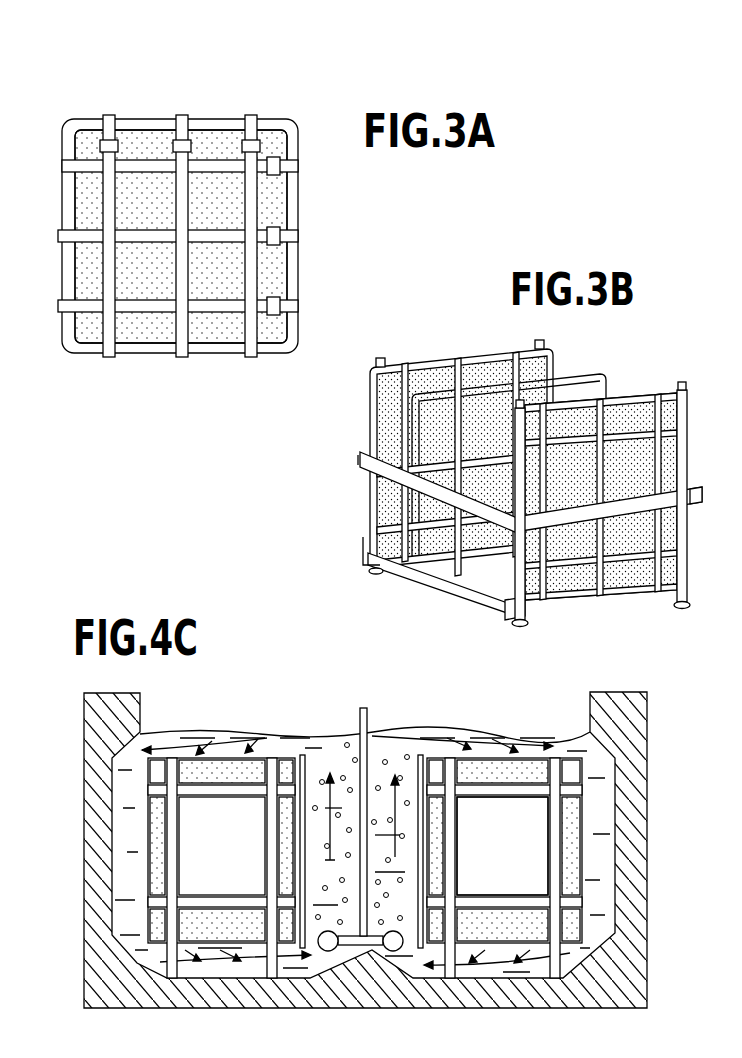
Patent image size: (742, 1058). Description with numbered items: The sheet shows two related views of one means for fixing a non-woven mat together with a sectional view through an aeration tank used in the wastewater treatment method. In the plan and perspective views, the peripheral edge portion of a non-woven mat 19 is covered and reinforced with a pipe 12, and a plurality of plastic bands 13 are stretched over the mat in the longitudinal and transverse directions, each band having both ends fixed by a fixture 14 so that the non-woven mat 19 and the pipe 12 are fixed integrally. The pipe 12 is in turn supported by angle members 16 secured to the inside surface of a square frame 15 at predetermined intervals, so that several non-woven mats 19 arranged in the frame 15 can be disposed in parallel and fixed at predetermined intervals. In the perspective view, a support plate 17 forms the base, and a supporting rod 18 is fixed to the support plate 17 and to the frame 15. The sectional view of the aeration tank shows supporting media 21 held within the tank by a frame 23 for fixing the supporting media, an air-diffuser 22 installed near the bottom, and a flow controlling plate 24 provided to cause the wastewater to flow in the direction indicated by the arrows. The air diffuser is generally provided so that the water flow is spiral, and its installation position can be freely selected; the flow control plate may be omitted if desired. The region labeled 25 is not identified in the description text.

In FIG. 3A, the pipe 12 is at (272, 123).
In FIG. 3B, the pipe 12 is at (477, 377).
In FIG. 3A, the plastic bands 13 is at (207, 163).
In FIG. 3B, the plastic bands 13 is at (618, 437).
In FIG. 3A, the fixture 14 is at (276, 244).
In FIG. 3B, the square frame 15 is at (695, 505).
In FIG. 3B, the angle members 16 is at (392, 462).
In FIG. 3B, the support plate 17 is at (458, 588).
In FIG. 3B, the supporting rod 18 is at (503, 580).
In FIG. 3A, the non-woven mat 19 is at (273, 213).
In FIG. 3B, the non-woven mat 19 is at (640, 468).
In FIG. 4C, the non-woven mat 19 is at (623, 717).
In FIG. 4C, the supporting media 21 is at (518, 772).
In FIG. 4C, the air-diffuser 22 is at (391, 929).
In FIG. 4C, the frame for fixing the supporting media 23 is at (442, 768).
In FIG. 4C, the flow controlling plate 24 is at (421, 763).
In FIG. 4C, the tank liquid 25 is at (602, 815).